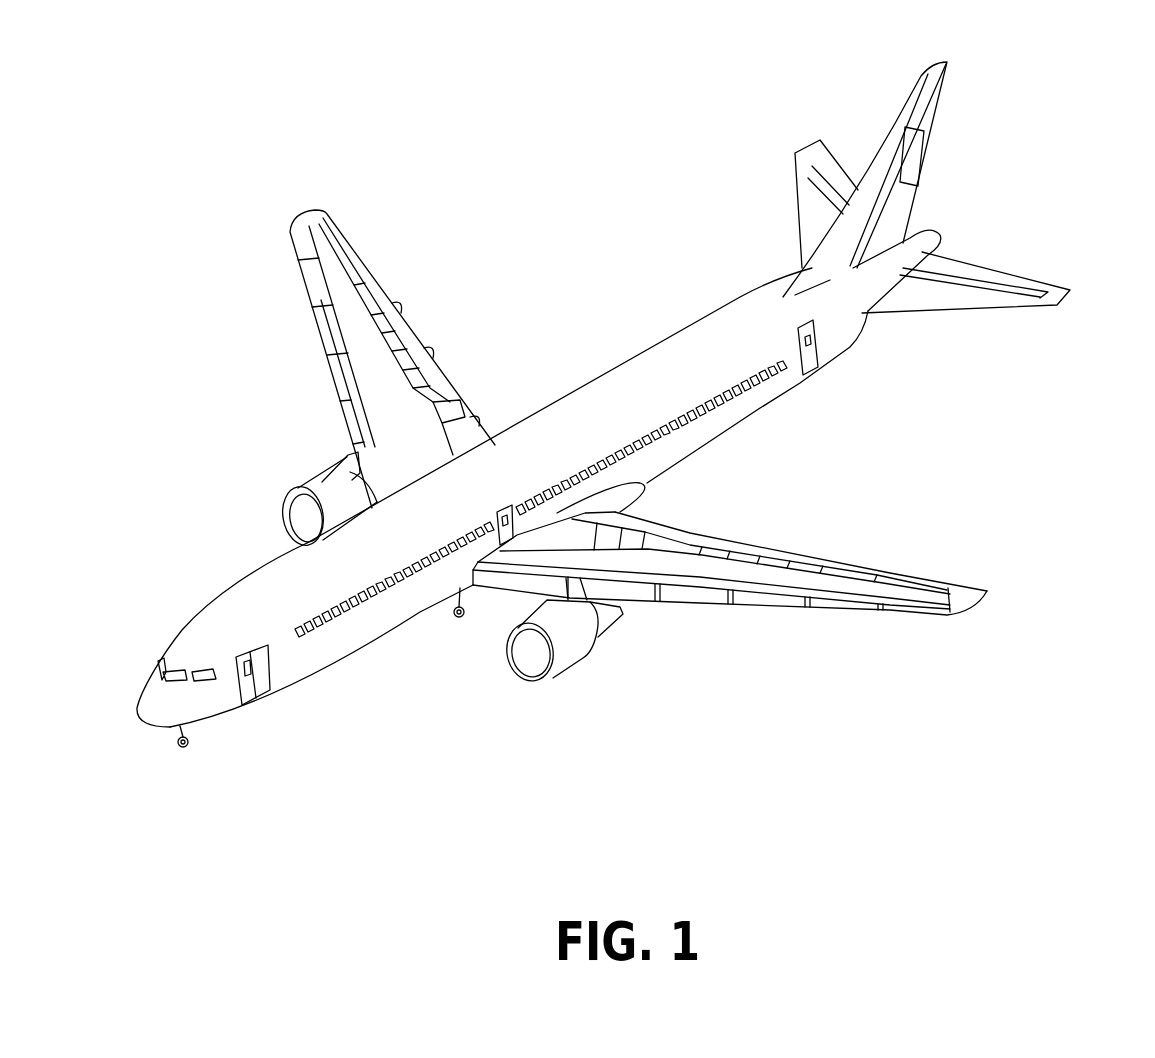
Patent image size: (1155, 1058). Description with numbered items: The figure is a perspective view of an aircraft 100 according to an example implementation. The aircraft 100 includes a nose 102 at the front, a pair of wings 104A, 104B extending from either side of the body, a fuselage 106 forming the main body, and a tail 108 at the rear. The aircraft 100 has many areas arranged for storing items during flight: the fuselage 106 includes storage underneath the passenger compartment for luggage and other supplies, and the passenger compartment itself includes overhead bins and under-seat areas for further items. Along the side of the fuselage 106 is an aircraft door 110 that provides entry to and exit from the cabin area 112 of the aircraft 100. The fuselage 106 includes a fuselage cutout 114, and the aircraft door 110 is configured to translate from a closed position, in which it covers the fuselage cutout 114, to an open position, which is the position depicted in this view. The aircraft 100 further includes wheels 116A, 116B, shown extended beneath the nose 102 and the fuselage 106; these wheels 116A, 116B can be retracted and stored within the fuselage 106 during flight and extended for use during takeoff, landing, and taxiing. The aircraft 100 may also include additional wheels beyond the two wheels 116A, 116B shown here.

The aircraft 100 is at (533, 326).
The nose 102 is at (140, 723).
The wing 104A is at (328, 210).
The wing 104B is at (993, 591).
The fuselage 106 is at (693, 440).
The tail 108 is at (957, 67).
The aircraft door 110 is at (238, 703).
The cabin area 112 is at (272, 663).
The fuselage cutout 114 is at (263, 683).
The wheel 116A is at (184, 750).
The wheel 116B is at (459, 618).